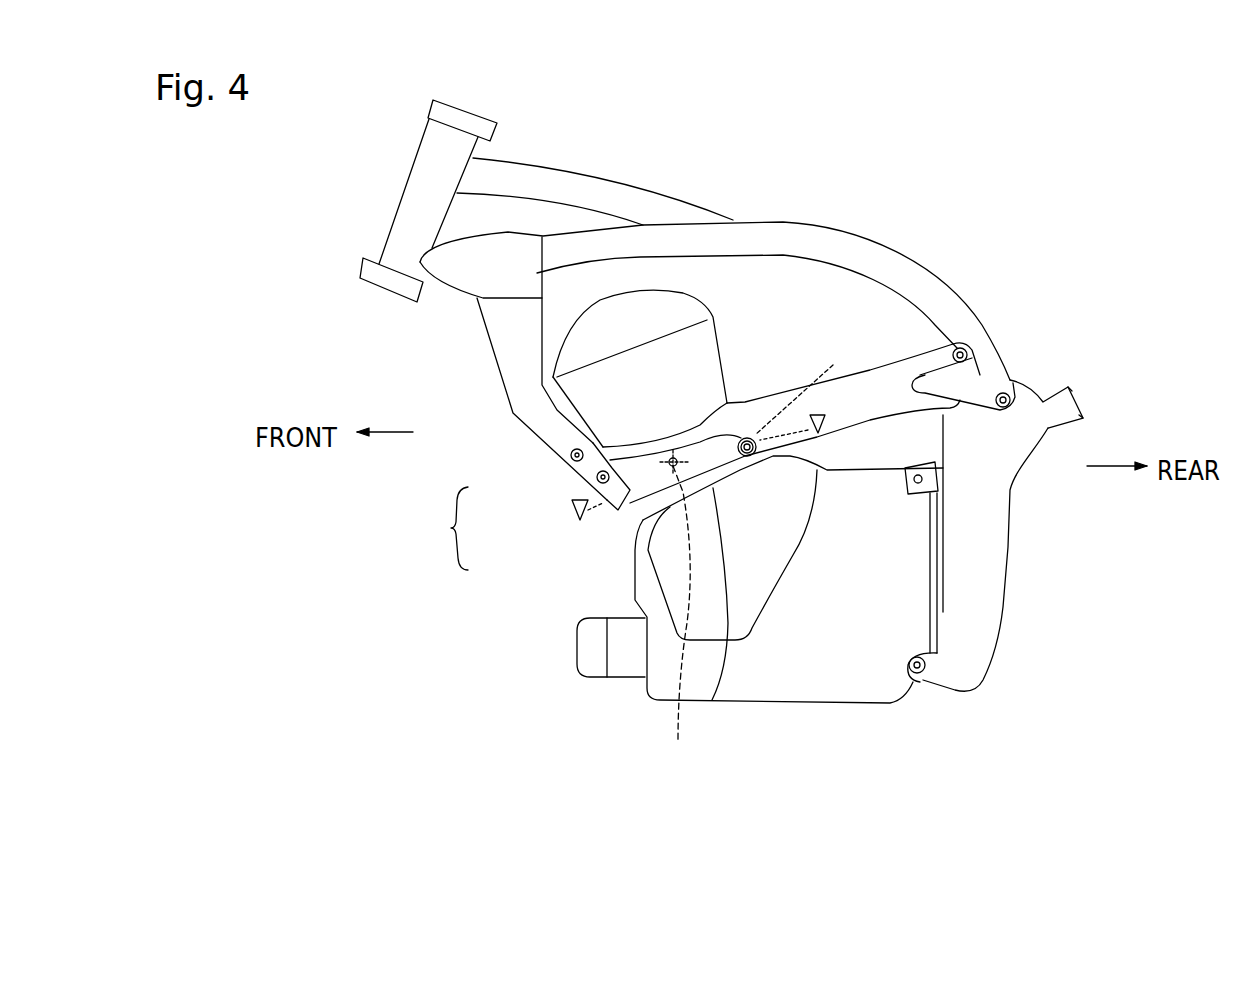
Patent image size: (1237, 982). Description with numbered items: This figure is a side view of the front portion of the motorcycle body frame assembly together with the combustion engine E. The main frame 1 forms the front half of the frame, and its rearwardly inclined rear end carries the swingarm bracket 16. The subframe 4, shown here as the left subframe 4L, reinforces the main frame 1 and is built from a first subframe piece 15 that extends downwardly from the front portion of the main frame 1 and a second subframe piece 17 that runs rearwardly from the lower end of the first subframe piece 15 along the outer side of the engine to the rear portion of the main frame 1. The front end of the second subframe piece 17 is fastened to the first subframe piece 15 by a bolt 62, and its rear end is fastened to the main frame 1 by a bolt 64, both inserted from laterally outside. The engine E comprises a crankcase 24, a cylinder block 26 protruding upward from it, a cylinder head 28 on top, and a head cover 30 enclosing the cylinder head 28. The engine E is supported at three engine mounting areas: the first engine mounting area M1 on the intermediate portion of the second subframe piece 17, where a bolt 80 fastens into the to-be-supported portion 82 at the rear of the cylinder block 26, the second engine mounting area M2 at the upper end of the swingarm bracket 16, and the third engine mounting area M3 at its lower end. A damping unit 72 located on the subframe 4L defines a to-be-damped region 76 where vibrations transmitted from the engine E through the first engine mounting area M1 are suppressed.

The main frame 1 is at (780, 228).
The subframe 4 is at (442, 161).
The left subframe 4L is at (434, 528).
The first subframe piece 15 is at (517, 402).
The swingarm bracket 16 is at (980, 617).
The second subframe piece 17 is at (643, 514).
The crankcase 24 is at (657, 683).
The cylinder block 26 is at (732, 405).
The cylinder head 28 is at (697, 347).
The head cover 30 is at (673, 308).
The bolt 62 is at (573, 463).
The bolt 64 is at (1013, 378).
The damping unit 72 is at (678, 625).
The to-be-damped region 76 is at (712, 704).
The bolt 80 is at (755, 478).
The to-be-supported portion 82 is at (809, 385).
The combustion engine E is at (775, 712).
The first engine mounting area M1 is at (752, 436).
The second engine mounting area M2 is at (932, 477).
The third engine mounting area M3 is at (913, 682).